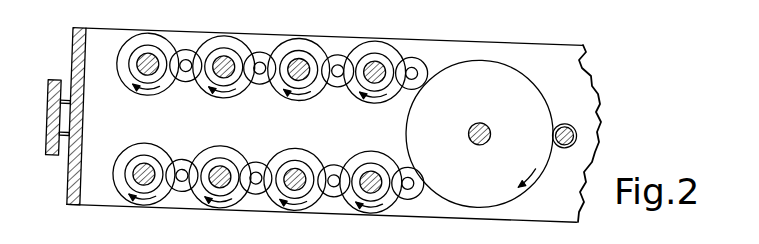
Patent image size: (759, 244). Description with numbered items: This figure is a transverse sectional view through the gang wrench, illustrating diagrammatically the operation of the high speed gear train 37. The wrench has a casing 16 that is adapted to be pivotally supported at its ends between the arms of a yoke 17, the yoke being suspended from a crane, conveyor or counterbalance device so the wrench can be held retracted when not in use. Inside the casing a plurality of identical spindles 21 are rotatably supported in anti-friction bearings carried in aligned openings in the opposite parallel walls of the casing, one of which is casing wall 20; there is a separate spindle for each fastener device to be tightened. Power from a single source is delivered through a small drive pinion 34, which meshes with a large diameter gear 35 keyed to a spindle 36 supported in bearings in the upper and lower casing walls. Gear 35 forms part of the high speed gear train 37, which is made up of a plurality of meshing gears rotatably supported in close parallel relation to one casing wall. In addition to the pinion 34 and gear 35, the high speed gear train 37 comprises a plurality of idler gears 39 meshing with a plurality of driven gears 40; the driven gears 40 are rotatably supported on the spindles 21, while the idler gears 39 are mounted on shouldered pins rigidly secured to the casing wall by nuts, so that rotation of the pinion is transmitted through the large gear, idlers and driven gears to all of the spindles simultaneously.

The casing 16 is at (64, 191).
The yoke 17 is at (48, 86).
The casing wall 20 is at (98, 47).
The spindles 21 is at (259, 125).
The drive pinion 34 is at (573, 126).
The large diameter gear 35 is at (531, 82).
The spindle 36 is at (485, 122).
The high speed gear train 37 is at (108, 74).
The idler gears 39 is at (259, 53).
The driven gears 40 is at (155, 95).